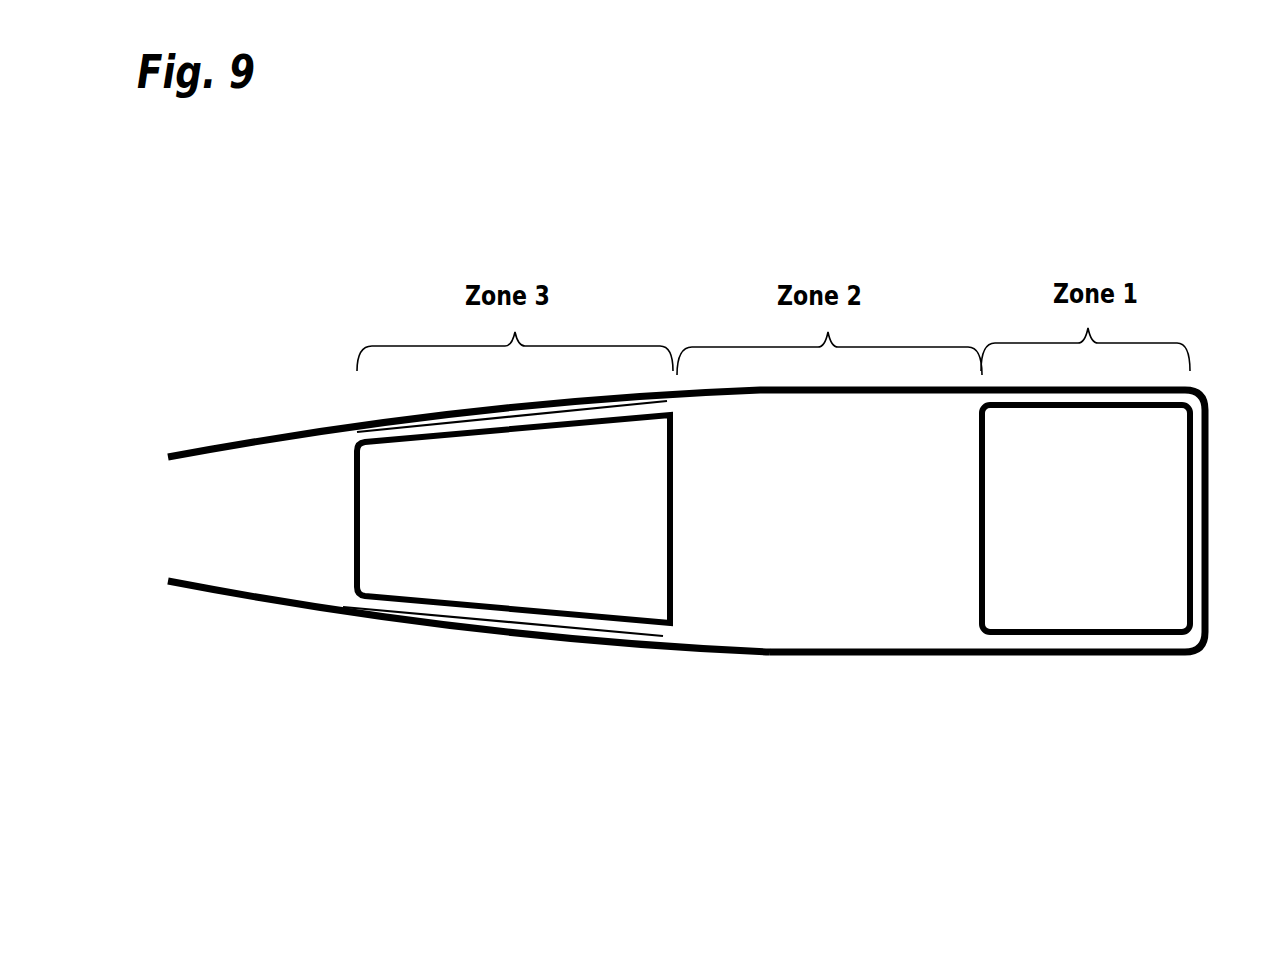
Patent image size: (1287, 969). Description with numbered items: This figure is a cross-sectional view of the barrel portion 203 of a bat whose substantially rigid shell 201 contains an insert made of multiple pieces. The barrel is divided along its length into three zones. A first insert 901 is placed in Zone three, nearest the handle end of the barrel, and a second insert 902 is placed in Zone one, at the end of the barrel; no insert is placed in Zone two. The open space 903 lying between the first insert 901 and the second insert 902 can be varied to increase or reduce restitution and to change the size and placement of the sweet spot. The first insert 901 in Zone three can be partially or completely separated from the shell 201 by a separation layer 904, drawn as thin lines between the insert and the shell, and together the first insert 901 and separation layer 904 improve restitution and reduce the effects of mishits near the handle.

The shell 201 is at (262, 418).
The barrel portion 203 is at (837, 652).
The first insert 901 is at (602, 415).
The second insert 902 is at (1003, 402).
The space 903 is at (860, 548).
The separation layer 904 is at (457, 420).